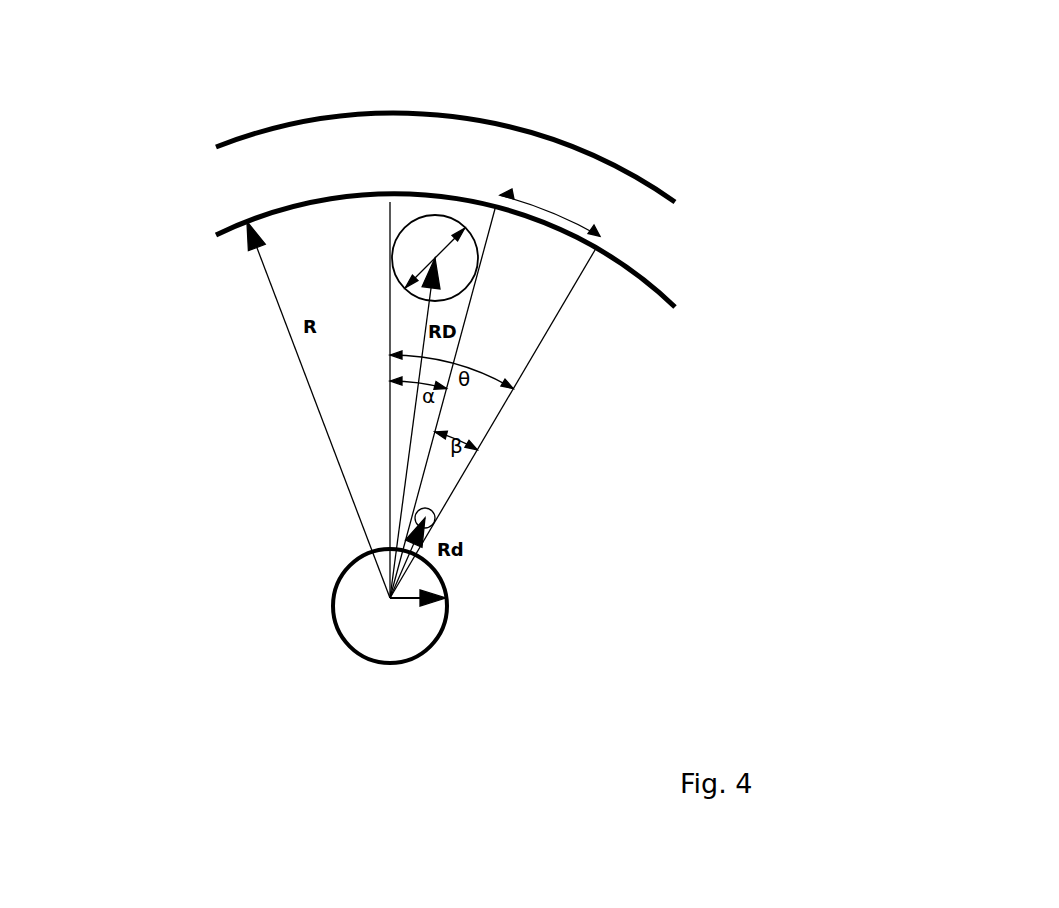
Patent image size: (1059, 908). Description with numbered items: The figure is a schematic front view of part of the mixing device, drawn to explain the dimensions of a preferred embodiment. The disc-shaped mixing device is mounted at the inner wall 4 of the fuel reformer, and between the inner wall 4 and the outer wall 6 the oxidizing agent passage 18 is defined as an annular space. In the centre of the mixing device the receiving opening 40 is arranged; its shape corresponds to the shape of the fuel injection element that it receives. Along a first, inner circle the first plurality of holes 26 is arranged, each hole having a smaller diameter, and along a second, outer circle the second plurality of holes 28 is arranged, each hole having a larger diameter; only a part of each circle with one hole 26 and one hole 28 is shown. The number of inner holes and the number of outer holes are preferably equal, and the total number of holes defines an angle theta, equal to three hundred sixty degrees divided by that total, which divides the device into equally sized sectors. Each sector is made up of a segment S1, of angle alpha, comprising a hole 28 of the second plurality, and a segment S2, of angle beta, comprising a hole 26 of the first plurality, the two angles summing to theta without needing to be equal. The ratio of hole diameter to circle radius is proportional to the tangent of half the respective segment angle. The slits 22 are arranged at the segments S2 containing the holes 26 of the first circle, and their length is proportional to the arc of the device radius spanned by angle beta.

The outer wall 6 is at (272, 120).
The inner wall 4 is at (215, 232).
The oxidizing agent passage 18 is at (262, 172).
The segment S2 is at (413, 207).
The slits 22 is at (550, 202).
The segment S1 is at (537, 278).
The second plurality of holes 28 is at (463, 273).
The first plurality of holes 26 is at (433, 516).
The receiving opening 40 is at (378, 635).